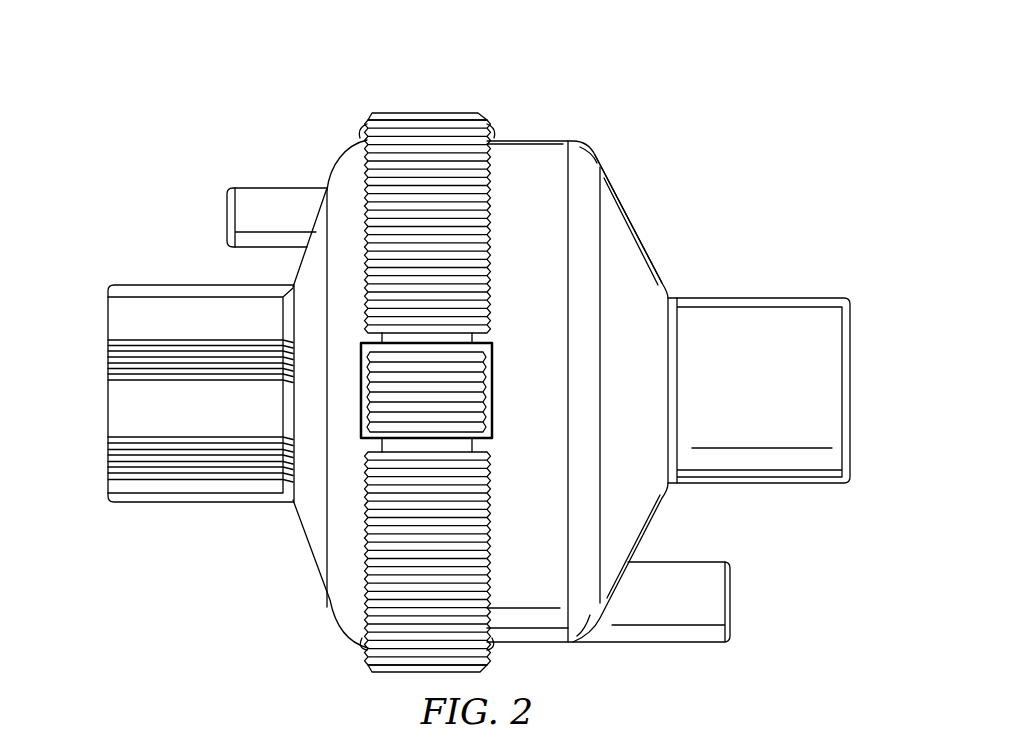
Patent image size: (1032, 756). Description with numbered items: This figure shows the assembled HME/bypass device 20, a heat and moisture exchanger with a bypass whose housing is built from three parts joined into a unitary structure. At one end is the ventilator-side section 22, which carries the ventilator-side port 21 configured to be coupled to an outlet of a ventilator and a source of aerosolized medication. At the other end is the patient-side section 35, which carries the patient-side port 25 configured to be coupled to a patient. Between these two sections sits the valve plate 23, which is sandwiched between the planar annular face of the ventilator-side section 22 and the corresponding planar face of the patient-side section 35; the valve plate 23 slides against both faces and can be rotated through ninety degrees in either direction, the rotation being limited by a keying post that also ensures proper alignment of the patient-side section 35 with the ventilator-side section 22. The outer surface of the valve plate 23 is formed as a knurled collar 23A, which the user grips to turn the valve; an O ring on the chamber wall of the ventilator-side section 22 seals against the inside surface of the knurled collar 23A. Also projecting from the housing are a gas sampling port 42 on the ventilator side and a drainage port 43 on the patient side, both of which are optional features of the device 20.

The HME/bypass device 20 is at (288, 82).
The ventilator-side port 21 is at (153, 284).
The ventilator-side section 22 is at (302, 551).
The valve plate 23 is at (498, 509).
The knurled collar 23A is at (457, 112).
The patient-side port 25 is at (758, 296).
The patient-side section 35 is at (643, 219).
The gas sampling port 42 is at (267, 187).
The drainage port 43 is at (682, 644).